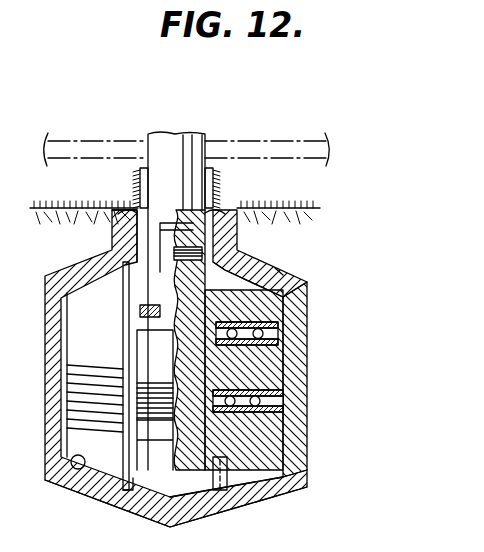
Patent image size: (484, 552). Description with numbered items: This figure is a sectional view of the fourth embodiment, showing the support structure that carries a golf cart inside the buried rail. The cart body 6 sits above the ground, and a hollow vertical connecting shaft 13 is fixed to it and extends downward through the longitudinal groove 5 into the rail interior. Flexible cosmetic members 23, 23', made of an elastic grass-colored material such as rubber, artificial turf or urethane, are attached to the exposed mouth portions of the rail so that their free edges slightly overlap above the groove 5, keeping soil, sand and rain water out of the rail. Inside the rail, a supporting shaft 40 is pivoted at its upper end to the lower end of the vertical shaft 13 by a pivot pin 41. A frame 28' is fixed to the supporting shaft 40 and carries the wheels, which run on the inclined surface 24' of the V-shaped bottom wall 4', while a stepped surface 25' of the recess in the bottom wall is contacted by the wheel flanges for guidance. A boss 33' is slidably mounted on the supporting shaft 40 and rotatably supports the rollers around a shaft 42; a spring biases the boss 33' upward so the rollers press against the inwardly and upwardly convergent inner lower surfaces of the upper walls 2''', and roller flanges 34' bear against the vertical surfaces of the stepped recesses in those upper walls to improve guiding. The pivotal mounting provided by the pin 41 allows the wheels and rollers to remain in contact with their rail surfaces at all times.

The vertical shaft 13 is at (158, 135).
The body 6 is at (318, 136).
The flexible cosmetic member 23 is at (124, 184).
The longitudinal groove 5 is at (187, 212).
The flexible cosmetic member 23' is at (231, 186).
The circumferential flange 34' is at (187, 331).
The pivot pin 41 is at (244, 261).
The upper walls 2''' is at (208, 368).
The supporting shaft 40 is at (210, 290).
The boss 33' is at (129, 387).
The shaft 42 is at (280, 366).
The inclined surface 24' is at (53, 491).
The stepped surface 25' is at (176, 510).
The frame 28' is at (192, 480).
The bottom wall 4' is at (235, 505).